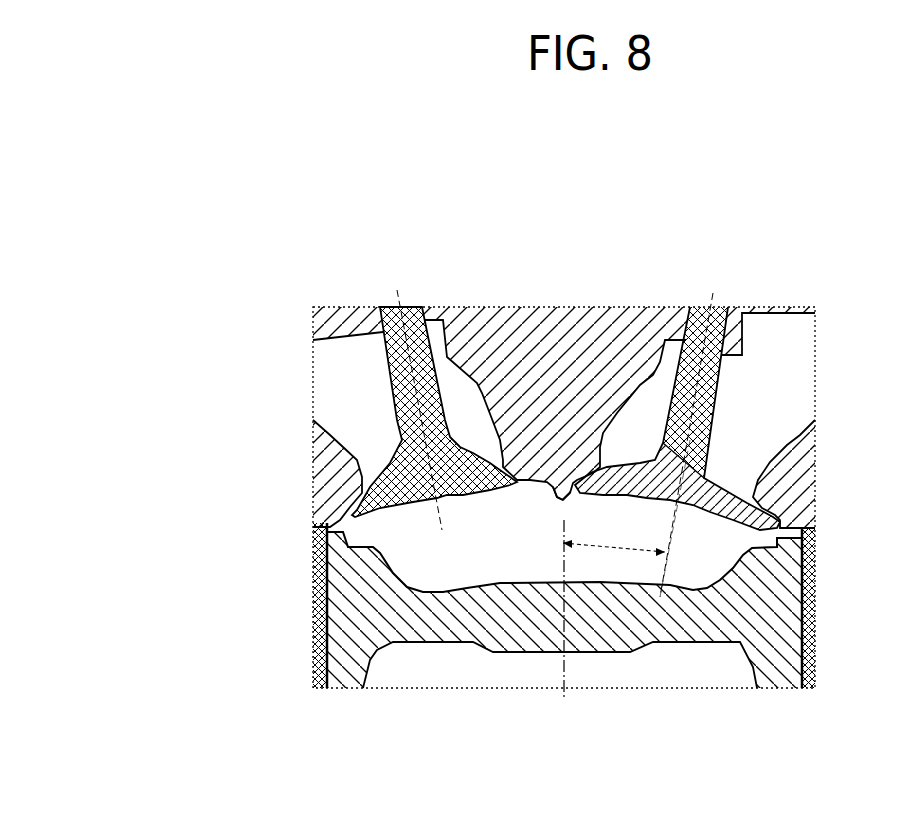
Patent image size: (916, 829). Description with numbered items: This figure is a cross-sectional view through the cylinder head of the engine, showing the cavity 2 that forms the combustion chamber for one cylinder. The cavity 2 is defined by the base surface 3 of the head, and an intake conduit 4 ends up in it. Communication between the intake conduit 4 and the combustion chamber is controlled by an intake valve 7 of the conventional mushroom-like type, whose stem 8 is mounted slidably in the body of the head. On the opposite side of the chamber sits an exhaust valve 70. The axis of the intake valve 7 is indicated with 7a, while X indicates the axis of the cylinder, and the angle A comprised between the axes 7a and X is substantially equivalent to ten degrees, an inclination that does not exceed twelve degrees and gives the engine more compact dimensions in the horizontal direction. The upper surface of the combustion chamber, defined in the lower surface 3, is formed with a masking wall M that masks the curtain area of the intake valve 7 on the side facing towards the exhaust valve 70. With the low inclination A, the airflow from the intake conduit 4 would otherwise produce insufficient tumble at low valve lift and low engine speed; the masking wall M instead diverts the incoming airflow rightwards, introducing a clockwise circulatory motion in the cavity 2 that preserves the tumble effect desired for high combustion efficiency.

The cavity 2 is at (425, 552).
The base surface 3 is at (810, 588).
The intake conduit 4 is at (785, 422).
The intake valve 7 is at (718, 431).
The axis of intake valve 7a is at (678, 511).
The stem 8 is at (718, 303).
The exhaust valve 70 is at (391, 423).
The masking wall M is at (553, 501).
The angle A is at (614, 535).
The axis of the cylinder X is at (578, 669).